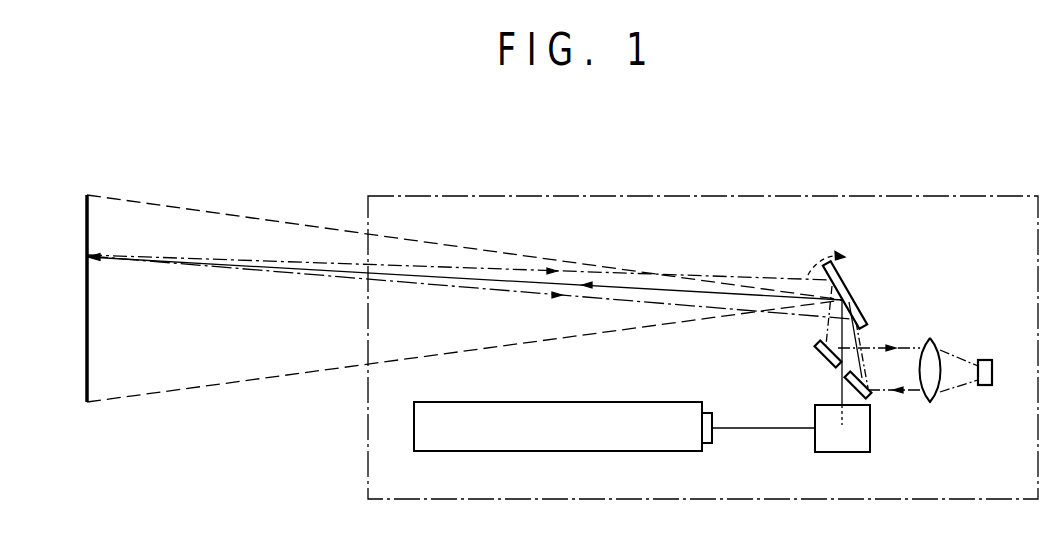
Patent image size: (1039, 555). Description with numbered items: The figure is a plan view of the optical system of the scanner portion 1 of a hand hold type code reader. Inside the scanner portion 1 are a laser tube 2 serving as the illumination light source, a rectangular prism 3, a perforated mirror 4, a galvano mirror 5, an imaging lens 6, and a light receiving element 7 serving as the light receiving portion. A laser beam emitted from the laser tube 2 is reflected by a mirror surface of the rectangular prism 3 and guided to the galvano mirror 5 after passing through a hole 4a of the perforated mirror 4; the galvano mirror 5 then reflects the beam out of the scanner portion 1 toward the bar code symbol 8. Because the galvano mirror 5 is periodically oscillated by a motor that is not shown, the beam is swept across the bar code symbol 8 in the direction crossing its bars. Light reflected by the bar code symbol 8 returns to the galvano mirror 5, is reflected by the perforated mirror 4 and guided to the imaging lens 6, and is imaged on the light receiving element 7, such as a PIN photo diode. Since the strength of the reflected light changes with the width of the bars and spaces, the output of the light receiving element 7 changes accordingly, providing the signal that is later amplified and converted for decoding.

The scanner portion 1 is at (827, 196).
The laser tube 2 is at (642, 402).
The rectangular prism 3 is at (832, 452).
The perforated mirror 4 is at (818, 358).
The hole 4a is at (839, 374).
The galvano mirror 5 is at (842, 273).
The imaging lens 6 is at (935, 340).
The light receiving element 7 is at (992, 373).
The bar code symbol 8 is at (83, 371).